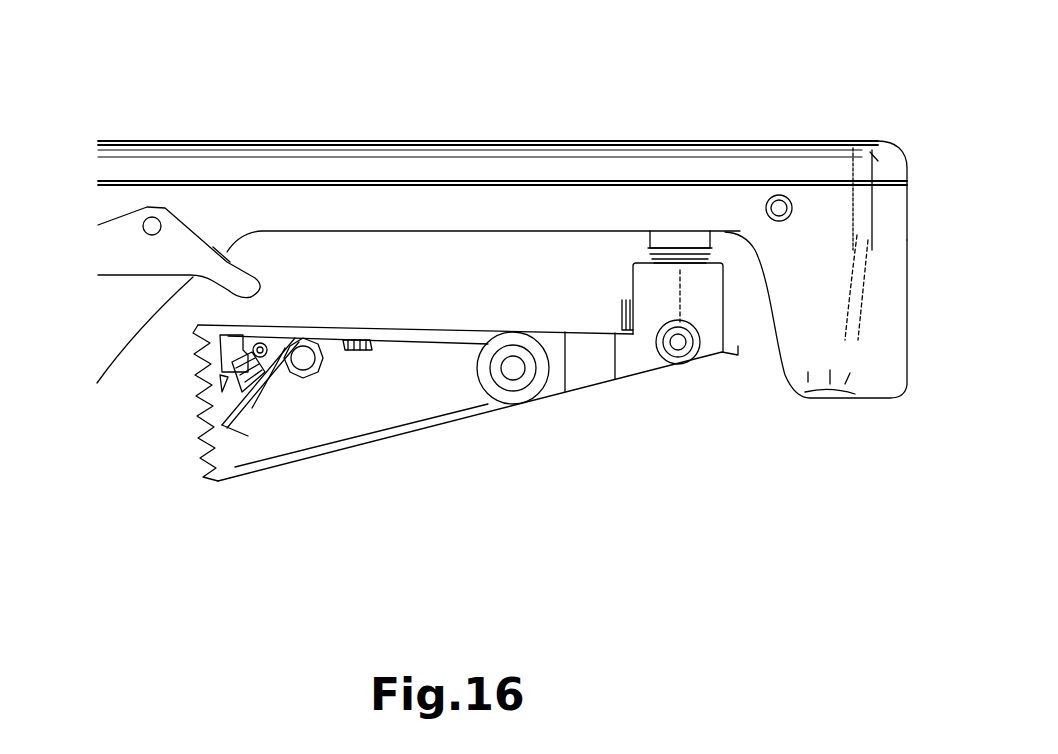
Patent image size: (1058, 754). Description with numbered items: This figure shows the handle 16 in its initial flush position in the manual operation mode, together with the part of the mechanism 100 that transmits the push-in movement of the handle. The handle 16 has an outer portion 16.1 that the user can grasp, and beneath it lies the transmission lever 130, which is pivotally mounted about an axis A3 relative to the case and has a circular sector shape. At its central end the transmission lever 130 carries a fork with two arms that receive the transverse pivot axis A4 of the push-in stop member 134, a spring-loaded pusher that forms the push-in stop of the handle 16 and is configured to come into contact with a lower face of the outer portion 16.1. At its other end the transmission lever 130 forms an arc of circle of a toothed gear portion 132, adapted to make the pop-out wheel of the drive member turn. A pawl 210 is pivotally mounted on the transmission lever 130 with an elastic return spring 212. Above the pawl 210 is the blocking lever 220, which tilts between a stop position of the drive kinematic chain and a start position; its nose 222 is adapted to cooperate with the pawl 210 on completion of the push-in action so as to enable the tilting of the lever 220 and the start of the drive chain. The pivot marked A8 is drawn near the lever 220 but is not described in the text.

The handle 16 is at (527, 142).
The outer portion 16.1 is at (695, 139).
The lever 220 is at (112, 249).
The nose 222 is at (227, 258).
The pivot axis of locking lever A8 is at (153, 217).
The transmission lever 130 is at (297, 464).
The gear portion 132 is at (193, 385).
The pawl 210 is at (225, 427).
The elastic return spring 212 is at (310, 340).
The axis A3 is at (511, 380).
The transverse pivot axis A4 is at (680, 352).
The push-in stop member 134 is at (725, 352).
The mechanism 100 is at (440, 453).